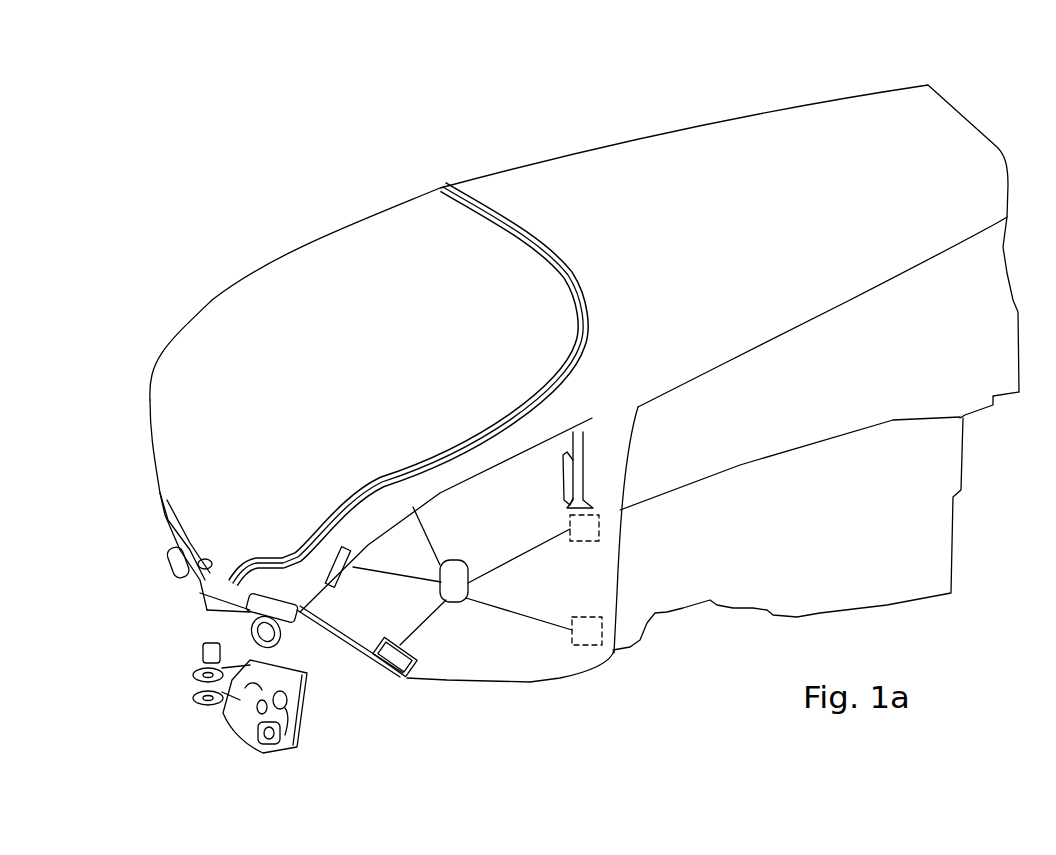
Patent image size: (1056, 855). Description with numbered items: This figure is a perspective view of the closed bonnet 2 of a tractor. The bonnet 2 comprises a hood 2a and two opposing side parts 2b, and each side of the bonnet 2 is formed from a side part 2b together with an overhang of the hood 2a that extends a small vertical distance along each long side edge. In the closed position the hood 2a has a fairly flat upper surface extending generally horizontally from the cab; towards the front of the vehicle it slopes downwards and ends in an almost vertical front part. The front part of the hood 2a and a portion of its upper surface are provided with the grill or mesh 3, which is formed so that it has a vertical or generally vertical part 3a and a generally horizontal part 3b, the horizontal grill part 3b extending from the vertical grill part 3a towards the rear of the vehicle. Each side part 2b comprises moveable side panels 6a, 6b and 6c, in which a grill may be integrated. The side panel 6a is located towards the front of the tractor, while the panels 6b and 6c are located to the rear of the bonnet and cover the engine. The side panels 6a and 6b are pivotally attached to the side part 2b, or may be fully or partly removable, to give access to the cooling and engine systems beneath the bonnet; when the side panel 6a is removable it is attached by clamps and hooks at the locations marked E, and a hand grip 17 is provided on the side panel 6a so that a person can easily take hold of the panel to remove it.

The bonnet 2 is at (733, 165).
The hood 2a is at (677, 289).
The side part 2b is at (588, 577).
The grill 3 is at (223, 325).
The generally vertical grill part 3a is at (197, 505).
The generally horizontal grill part 3b is at (360, 262).
The side panel 6a is at (494, 540).
The side panel 6b is at (822, 392).
The side panel 6c is at (790, 537).
The hand grip 17 is at (567, 486).